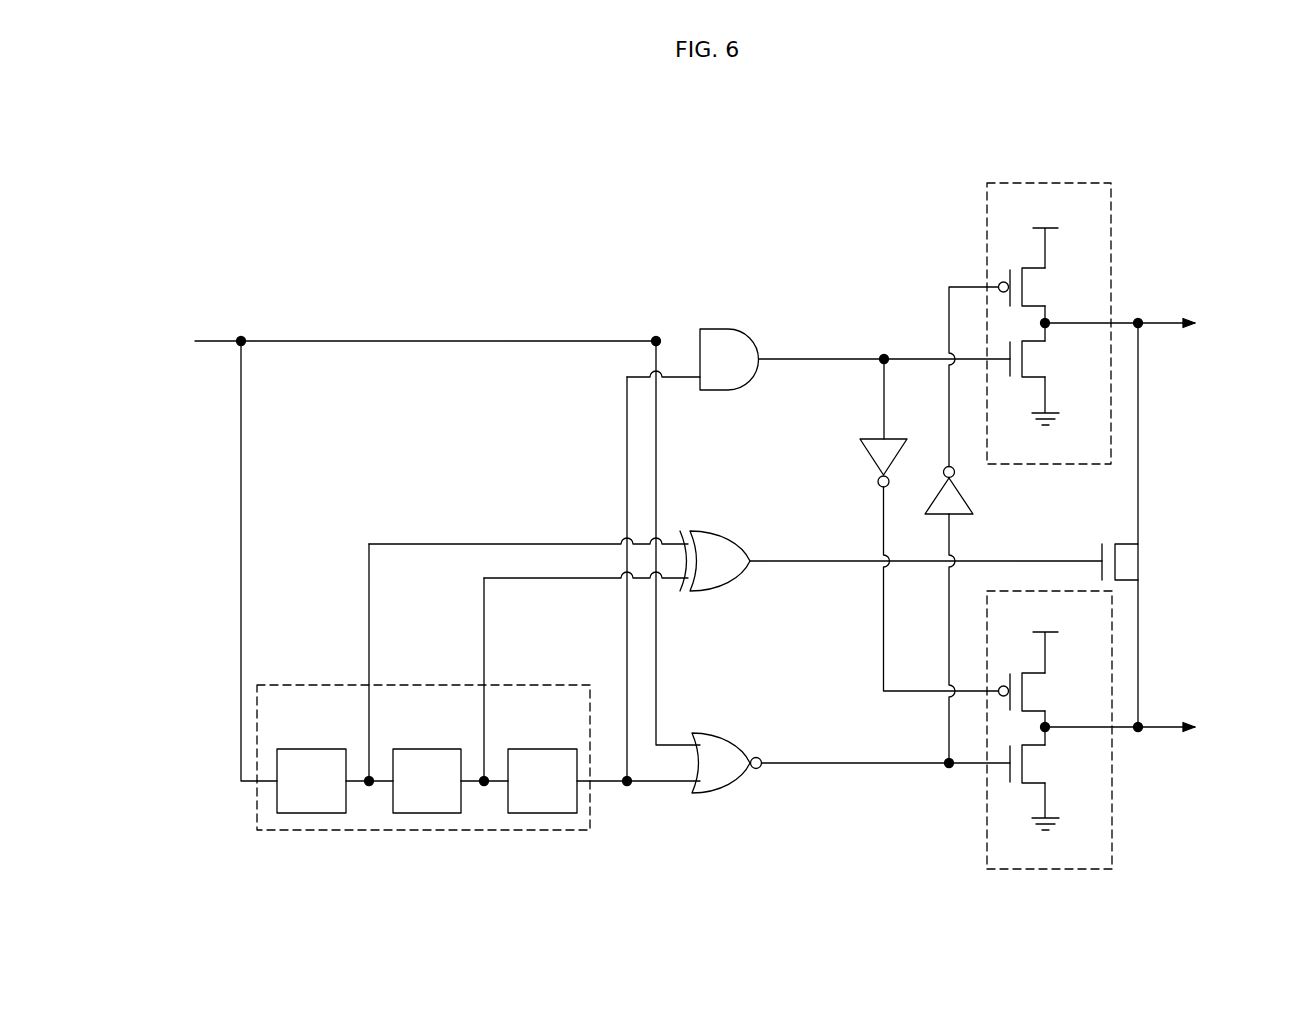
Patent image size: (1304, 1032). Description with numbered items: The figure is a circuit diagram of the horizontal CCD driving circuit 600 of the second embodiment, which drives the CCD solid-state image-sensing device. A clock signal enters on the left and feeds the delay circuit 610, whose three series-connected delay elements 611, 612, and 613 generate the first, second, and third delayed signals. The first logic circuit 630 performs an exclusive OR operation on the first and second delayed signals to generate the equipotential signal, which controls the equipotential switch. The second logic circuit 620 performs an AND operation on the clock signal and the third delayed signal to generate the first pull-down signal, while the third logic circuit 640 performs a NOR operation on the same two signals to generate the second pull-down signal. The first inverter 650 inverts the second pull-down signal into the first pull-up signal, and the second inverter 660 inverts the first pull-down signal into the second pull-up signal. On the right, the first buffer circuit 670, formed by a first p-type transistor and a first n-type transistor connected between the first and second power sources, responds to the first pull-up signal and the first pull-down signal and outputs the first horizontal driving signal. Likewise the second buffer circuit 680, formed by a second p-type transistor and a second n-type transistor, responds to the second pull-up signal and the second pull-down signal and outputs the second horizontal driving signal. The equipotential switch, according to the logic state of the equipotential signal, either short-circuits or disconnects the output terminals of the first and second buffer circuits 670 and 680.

The horizontal CCD driving circuit 600 is at (1195, 150).
The delay circuit 610 is at (425, 832).
The delay element 611 is at (311, 749).
The delay element 612 is at (426, 749).
The delay element 613 is at (541, 749).
The second logic circuit 620 is at (712, 329).
The first logic circuit 630 is at (712, 533).
The third logic circuit 640 is at (713, 734).
The first inverter 650 is at (968, 500).
The second inverter 660 is at (868, 456).
The first buffer circuit 670 is at (1055, 183).
The second buffer circuit 680 is at (1052, 870).